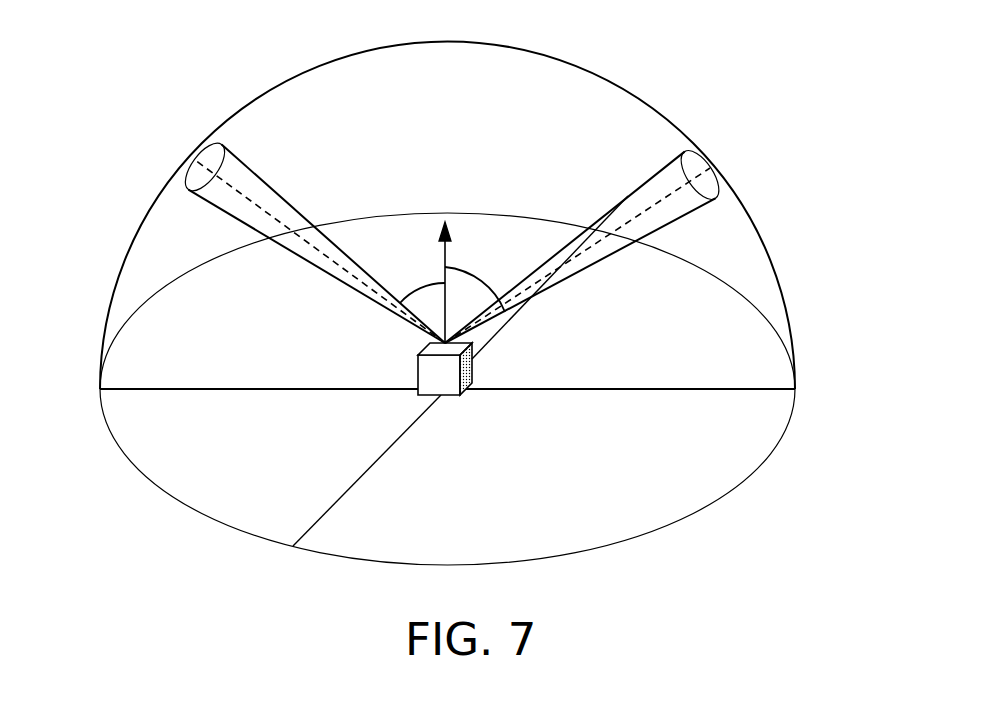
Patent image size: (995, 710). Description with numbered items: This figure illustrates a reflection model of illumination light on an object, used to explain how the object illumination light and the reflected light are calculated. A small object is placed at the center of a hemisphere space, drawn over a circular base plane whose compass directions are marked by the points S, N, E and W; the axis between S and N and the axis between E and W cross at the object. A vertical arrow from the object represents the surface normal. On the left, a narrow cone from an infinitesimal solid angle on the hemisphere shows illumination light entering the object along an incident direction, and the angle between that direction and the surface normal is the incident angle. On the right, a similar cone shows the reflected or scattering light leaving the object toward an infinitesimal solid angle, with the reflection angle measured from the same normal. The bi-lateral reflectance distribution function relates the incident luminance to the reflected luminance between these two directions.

The south axis S is at (242, 390).
The north axis N is at (645, 390).
The east axis E is at (358, 486).
The west axis W is at (550, 277).